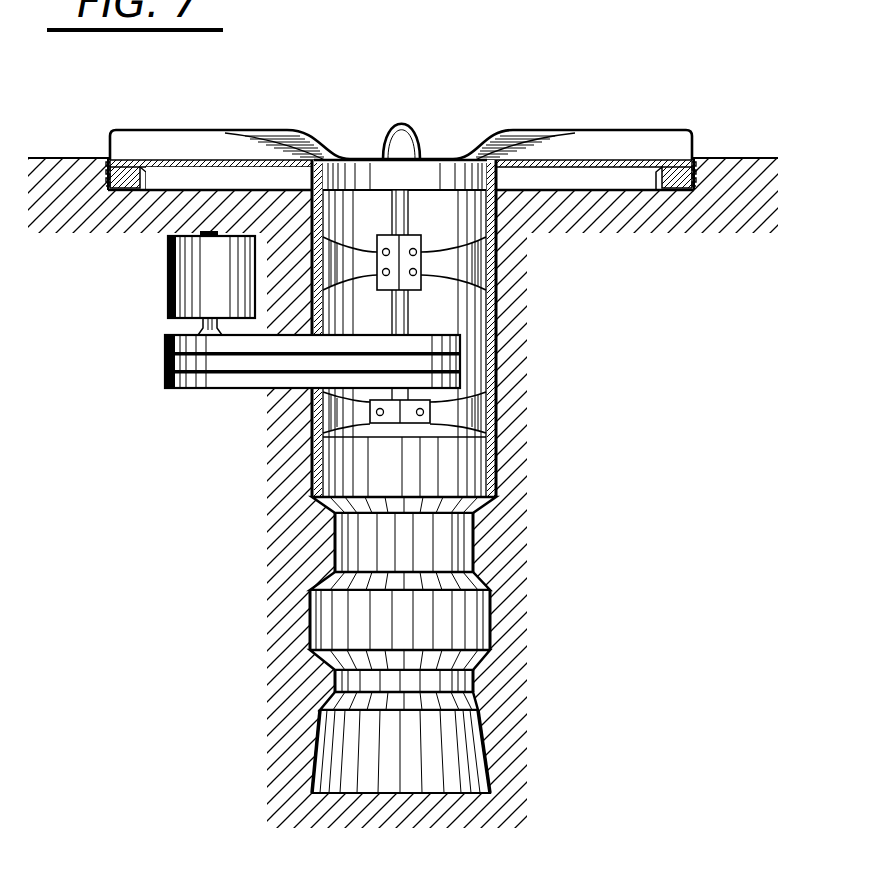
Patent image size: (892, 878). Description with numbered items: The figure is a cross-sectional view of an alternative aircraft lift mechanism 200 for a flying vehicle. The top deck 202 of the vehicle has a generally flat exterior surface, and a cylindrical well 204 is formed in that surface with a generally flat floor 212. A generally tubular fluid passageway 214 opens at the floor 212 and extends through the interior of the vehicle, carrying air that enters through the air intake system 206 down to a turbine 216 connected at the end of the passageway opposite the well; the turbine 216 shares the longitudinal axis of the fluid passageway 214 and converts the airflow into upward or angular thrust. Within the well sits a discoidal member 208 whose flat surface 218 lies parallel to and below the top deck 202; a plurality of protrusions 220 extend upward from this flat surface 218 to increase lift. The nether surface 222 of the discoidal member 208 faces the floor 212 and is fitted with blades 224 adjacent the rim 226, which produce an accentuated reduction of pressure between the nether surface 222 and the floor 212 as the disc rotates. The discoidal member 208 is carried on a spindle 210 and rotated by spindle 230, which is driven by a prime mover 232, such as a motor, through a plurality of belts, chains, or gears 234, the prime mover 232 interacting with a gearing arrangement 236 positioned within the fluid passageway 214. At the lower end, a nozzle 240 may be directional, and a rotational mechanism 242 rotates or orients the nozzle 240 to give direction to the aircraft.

The aircraft lift mechanism 200 is at (625, 82).
The top deck 202 is at (703, 215).
The cylindrical well 204 is at (706, 180).
The air intake system 206 is at (425, 148).
The discoidal member 208 is at (173, 129).
The spindle 210 is at (402, 313).
The floor 212 is at (610, 191).
The fluid passageway 214 is at (496, 370).
The turbine 216 is at (468, 623).
The flat surface 218 is at (227, 160).
The protrusions 220 is at (142, 129).
The nether surface 222 is at (184, 168).
The blades 224 is at (118, 193).
The rim 226 is at (104, 182).
The spindle 230 is at (403, 214).
The prime mover 232 is at (193, 287).
The belts, chains, or gears 234 is at (268, 385).
The gearing arrangement 236 is at (440, 362).
The nozzle 240 is at (465, 752).
The rotational mechanism 242 is at (455, 682).